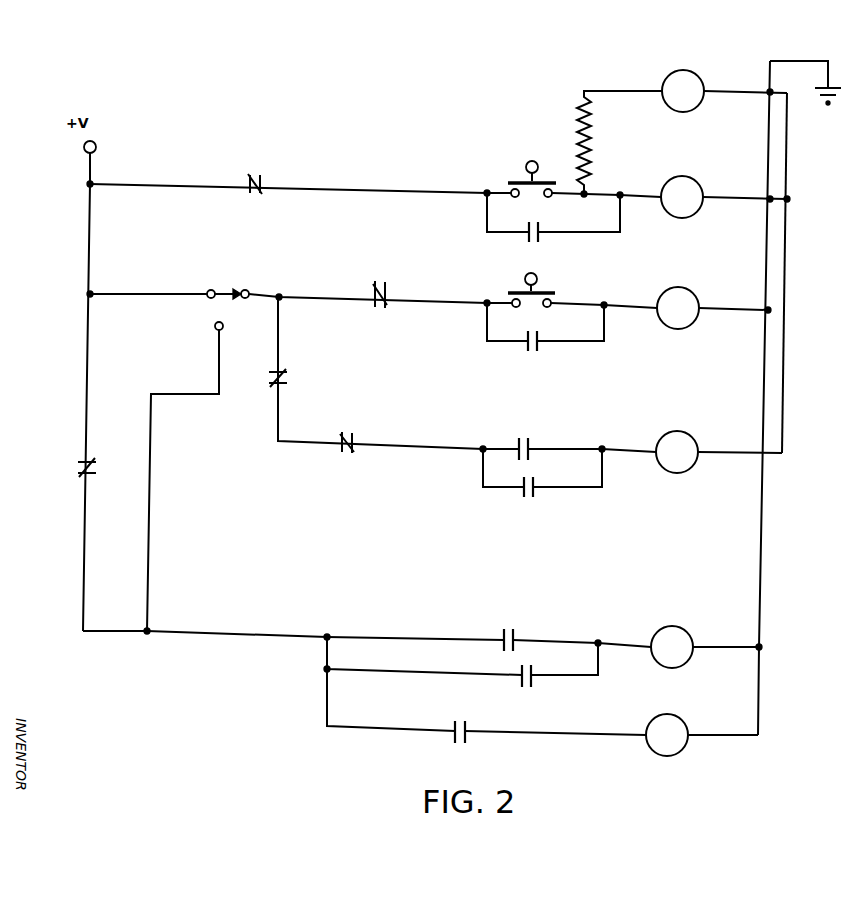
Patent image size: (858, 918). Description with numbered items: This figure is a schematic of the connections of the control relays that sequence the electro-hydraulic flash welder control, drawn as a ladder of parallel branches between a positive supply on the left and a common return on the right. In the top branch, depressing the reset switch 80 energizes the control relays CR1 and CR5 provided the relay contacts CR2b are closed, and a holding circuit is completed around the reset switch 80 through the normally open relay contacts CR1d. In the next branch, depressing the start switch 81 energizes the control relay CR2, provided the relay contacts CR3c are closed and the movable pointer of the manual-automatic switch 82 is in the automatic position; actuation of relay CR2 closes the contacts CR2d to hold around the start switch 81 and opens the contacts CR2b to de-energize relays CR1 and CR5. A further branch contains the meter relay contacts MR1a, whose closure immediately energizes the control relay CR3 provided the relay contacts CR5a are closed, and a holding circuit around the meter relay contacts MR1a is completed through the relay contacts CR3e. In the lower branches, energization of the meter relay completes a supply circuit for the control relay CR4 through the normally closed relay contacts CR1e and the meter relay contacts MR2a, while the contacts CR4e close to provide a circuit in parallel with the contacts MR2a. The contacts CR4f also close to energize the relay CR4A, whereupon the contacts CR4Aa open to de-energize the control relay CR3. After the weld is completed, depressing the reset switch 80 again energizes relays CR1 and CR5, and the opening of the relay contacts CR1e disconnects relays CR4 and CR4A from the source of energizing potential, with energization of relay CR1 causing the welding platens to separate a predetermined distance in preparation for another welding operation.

The reset switch 80 is at (510, 183).
The start switch 81 is at (520, 290).
The manual-automatic switch 82 is at (228, 291).
The control relay CR1 is at (686, 196).
The control relay CR2 is at (684, 306).
The control relay CR3 is at (683, 450).
The control relay CR4 is at (680, 646).
The relay CR4A is at (668, 729).
The control relay CR5 is at (678, 88).
The relay contacts CR1d is at (540, 236).
The relay contacts CR1e is at (86, 466).
The relay contacts CR2b is at (288, 158).
The relay contacts CR2d is at (540, 345).
The relay contacts CR3c is at (398, 270).
The relay contacts CR3e is at (535, 494).
The relay contacts CR4Aa is at (347, 441).
The relay contacts CR4e is at (532, 679).
The relay contacts CR4f is at (466, 729).
The relay contacts CR5a is at (284, 379).
The meter relay contacts MR1a is at (546, 418).
The meter relay contacts MR2a is at (540, 614).